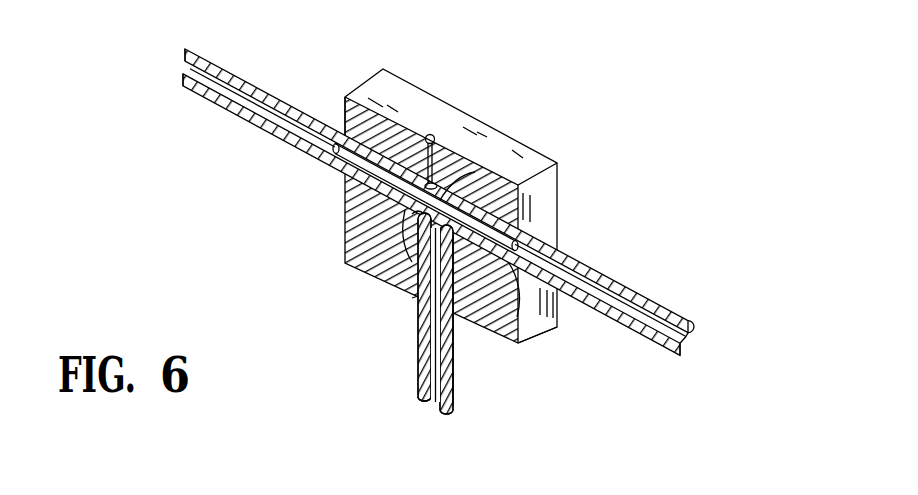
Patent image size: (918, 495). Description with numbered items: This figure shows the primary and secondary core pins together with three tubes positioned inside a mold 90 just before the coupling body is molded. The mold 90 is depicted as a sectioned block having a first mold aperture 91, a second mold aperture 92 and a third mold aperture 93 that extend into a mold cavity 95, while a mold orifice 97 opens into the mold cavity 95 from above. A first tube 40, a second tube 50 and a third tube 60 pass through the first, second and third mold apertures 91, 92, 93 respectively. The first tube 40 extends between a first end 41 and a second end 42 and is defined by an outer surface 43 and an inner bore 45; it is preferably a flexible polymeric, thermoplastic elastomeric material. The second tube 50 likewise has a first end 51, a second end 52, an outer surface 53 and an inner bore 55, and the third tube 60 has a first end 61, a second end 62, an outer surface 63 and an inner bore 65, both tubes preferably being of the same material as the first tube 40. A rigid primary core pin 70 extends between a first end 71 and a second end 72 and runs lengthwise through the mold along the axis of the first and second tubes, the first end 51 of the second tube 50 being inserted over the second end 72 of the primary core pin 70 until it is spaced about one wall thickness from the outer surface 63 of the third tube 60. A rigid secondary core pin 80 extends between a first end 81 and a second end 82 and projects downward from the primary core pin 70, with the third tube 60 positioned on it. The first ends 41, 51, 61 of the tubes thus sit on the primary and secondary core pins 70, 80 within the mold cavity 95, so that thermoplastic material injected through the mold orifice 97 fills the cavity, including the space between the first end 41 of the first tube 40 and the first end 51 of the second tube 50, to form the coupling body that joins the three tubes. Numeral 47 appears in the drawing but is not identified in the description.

The first tube 40 is at (247, 122).
The first end of the first tube 41 is at (372, 210).
The second end of the first tube 42 is at (188, 85).
The outer surface of the first tube 43 is at (192, 48).
The inner bore of the first tube 45 is at (193, 77).
The pin base 47 is at (437, 184).
The second tube 50 is at (635, 333).
The first end of the second tube 51 is at (523, 338).
The second end of the second tube 52 is at (672, 353).
The outer surface of the second tube 53 is at (697, 325).
The inner bore of the second tube 55 is at (692, 345).
The third tube 60 is at (417, 353).
The first end of the third tube 61 is at (387, 227).
The second end of the third tube 62 is at (455, 407).
The outer surface of the third tube 63 is at (418, 385).
The inner bore of the third tube 65 is at (434, 400).
The primary core pin 70 is at (548, 160).
The first end of the primary core pin 71 is at (328, 163).
The second end of the primary core pin 72 is at (557, 247).
The secondary core pin 80 is at (418, 282).
The first end of the secondary core pin 81 is at (405, 252).
The second end of the secondary core pin 82 is at (453, 322).
The mold 90 is at (390, 77).
The first mold aperture 91 is at (343, 133).
The second mold aperture 92 is at (543, 227).
The third mold aperture 93 is at (412, 298).
The mold cavity 95 is at (467, 177).
The mold orifice 97 is at (428, 135).